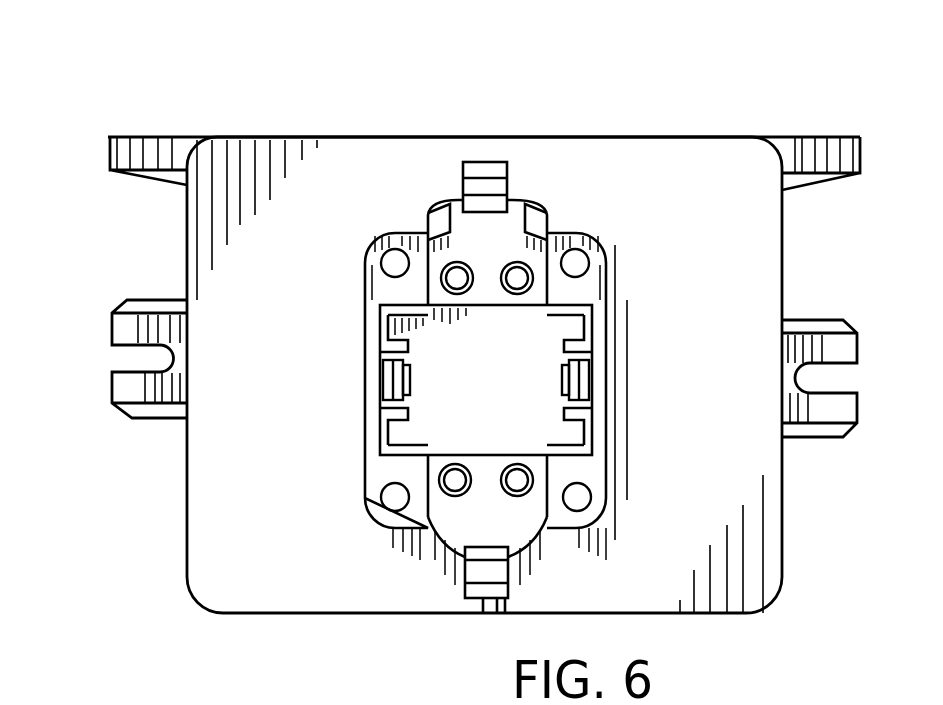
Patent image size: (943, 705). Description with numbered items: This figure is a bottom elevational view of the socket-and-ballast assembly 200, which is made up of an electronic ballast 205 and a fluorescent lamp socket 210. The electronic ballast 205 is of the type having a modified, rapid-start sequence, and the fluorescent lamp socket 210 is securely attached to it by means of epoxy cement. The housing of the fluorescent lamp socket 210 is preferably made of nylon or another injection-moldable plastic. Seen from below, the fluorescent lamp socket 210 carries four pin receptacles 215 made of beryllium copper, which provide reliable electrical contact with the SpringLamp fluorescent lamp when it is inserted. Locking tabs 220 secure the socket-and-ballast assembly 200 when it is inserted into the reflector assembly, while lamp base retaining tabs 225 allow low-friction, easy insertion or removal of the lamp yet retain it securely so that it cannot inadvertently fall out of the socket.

The socket-and-ballast assembly 200 is at (200, 110).
The electronic ballast 205 is at (708, 185).
The fluorescent lamp socket 210 is at (367, 508).
The pin receptacles 215 is at (511, 264).
The locking tabs 220 is at (484, 168).
The lamp base retaining tabs 225 is at (385, 380).